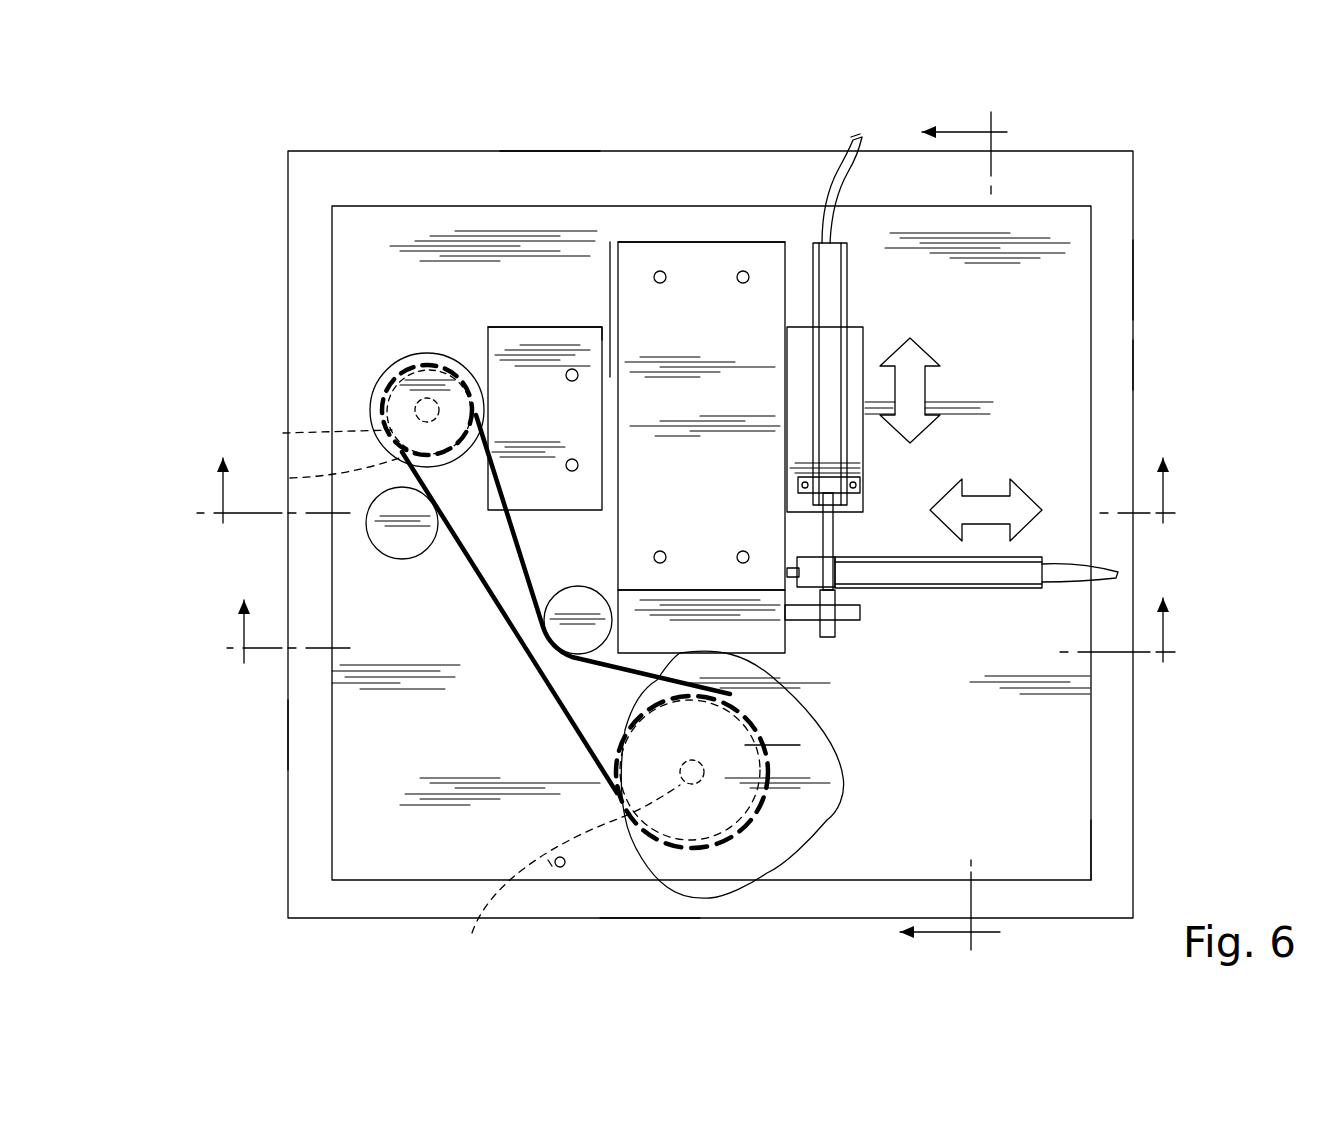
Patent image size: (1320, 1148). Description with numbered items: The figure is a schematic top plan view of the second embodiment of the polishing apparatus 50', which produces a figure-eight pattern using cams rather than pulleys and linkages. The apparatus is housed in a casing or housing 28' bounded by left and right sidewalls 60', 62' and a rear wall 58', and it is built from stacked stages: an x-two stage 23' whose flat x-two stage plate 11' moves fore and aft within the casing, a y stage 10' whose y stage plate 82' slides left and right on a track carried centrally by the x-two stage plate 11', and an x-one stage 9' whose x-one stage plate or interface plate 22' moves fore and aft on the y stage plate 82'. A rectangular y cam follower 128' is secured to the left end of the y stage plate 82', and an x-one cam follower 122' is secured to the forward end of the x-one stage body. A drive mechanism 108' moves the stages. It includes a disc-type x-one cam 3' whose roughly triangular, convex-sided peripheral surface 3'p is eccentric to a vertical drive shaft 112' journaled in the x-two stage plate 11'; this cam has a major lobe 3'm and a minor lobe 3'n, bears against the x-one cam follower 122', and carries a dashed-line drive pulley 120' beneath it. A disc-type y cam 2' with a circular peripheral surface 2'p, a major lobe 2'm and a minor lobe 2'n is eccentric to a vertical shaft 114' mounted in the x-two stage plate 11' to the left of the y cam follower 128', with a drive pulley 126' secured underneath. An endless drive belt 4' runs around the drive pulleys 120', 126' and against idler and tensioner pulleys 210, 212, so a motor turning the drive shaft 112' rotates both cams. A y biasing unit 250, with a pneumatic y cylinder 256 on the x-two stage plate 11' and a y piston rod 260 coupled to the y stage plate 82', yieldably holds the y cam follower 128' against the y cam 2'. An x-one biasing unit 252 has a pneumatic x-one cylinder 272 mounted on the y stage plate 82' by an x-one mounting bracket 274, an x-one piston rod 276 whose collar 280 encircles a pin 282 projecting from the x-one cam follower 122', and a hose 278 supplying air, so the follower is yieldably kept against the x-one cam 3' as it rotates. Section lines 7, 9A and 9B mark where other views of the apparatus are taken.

The polishing apparatus 50' is at (731, 501).
The x2 stage 23' is at (711, 488).
The rear wall 58' is at (550, 114).
The casing or housing 28' is at (1172, 267).
The right sidewall 62' is at (1162, 365).
The left sidewall 60' is at (246, 735).
The x2 stage plate 11' is at (1154, 843).
The drive mechanism 108' is at (609, 937).
The y stage 10' is at (542, 306).
The y cam follower 128' is at (545, 302).
The y stage plate 82' is at (631, 232).
The x1 stage 9' is at (701, 346).
The x1 stage plate 22' is at (725, 184).
The x1 cam follower 122' is at (701, 621).
The y piston rod 260 is at (792, 562).
The x1 biasing unit 252 is at (850, 282).
The pneumatic x1 cylinder 272 is at (848, 302).
The hose 278 is at (858, 142).
The x1 mounting bracket 274 is at (860, 485).
The x1 piston rod 276 is at (838, 540).
The collar 280 is at (827, 640).
The pin 282 is at (860, 620).
The y biasing unit 250 is at (926, 590).
The pneumatic y cylinder 256 is at (990, 590).
The y cam 2' is at (366, 383).
The major lobe 2'm is at (419, 366).
The peripheral surface 2'p is at (351, 411).
The minor lobe 2'n is at (462, 471).
The vertical shaft 114' is at (314, 433).
The drive pulley 126' is at (323, 472).
The idler and tensioner pulley 210 is at (400, 560).
The idler and tensioner pulley 212 is at (585, 587).
The endless drive belt 4' is at (566, 604).
The x1 cam 3' is at (767, 807).
The peripheral surface 3'p is at (799, 774).
The major lobe 3'm is at (830, 725).
The minor lobe 3'n is at (593, 748).
The drive pulley 120' is at (661, 757).
The vertical drive shaft 112' is at (561, 873).
The section line 7- 7 is at (953, 532).
The section line 9A is at (698, 481).
The section line 9B is at (705, 630).